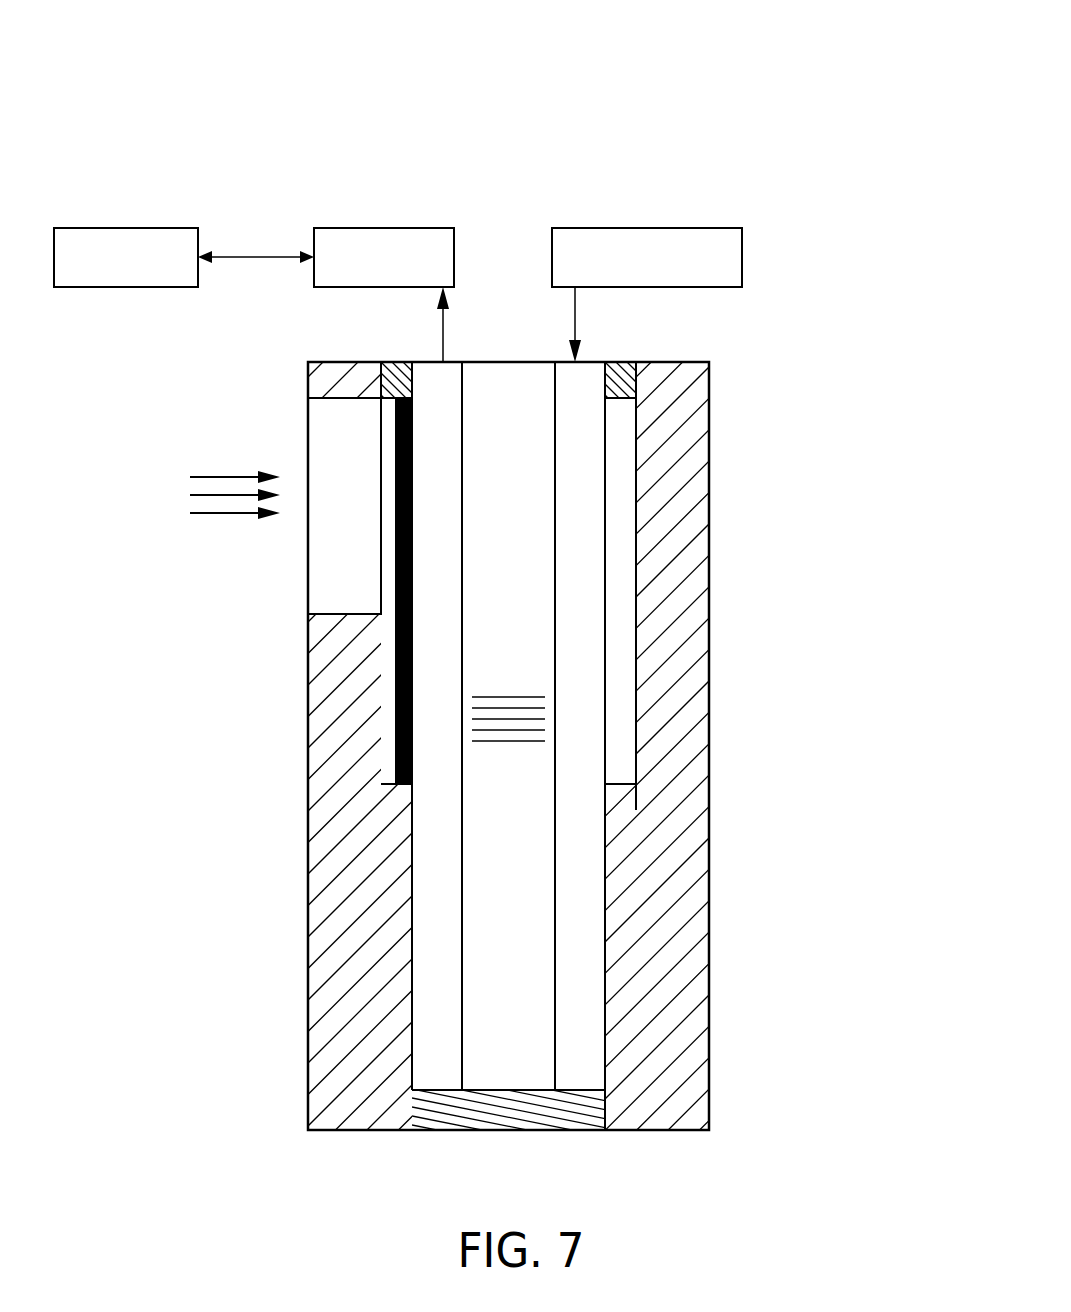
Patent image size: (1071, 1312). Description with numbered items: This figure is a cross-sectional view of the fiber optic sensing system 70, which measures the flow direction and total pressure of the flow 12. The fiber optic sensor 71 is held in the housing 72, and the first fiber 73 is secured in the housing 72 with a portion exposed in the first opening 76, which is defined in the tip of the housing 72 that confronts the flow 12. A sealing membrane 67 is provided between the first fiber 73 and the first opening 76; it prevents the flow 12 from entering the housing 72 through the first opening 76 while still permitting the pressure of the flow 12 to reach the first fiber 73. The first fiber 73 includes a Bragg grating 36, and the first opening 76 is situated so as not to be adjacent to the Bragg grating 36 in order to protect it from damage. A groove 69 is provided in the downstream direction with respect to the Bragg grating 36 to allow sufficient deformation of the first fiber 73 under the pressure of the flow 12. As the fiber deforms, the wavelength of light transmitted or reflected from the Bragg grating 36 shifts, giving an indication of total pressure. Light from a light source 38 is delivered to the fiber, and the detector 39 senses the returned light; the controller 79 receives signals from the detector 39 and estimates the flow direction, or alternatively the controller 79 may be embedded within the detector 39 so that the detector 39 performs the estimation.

The fiber optic sensing system 70 is at (807, 68).
The controller 79 is at (127, 228).
The detector 39 is at (383, 228).
The light source 38 is at (742, 252).
The fiber optic sensor 71 is at (587, 377).
The flow 12 is at (207, 477).
The first opening 76 is at (308, 583).
The Bragg grating 36 is at (509, 696).
The groove 69 is at (621, 749).
The sealing membrane 67 is at (397, 760).
The housing 72 is at (698, 992).
The first fiber 73 is at (540, 1071).